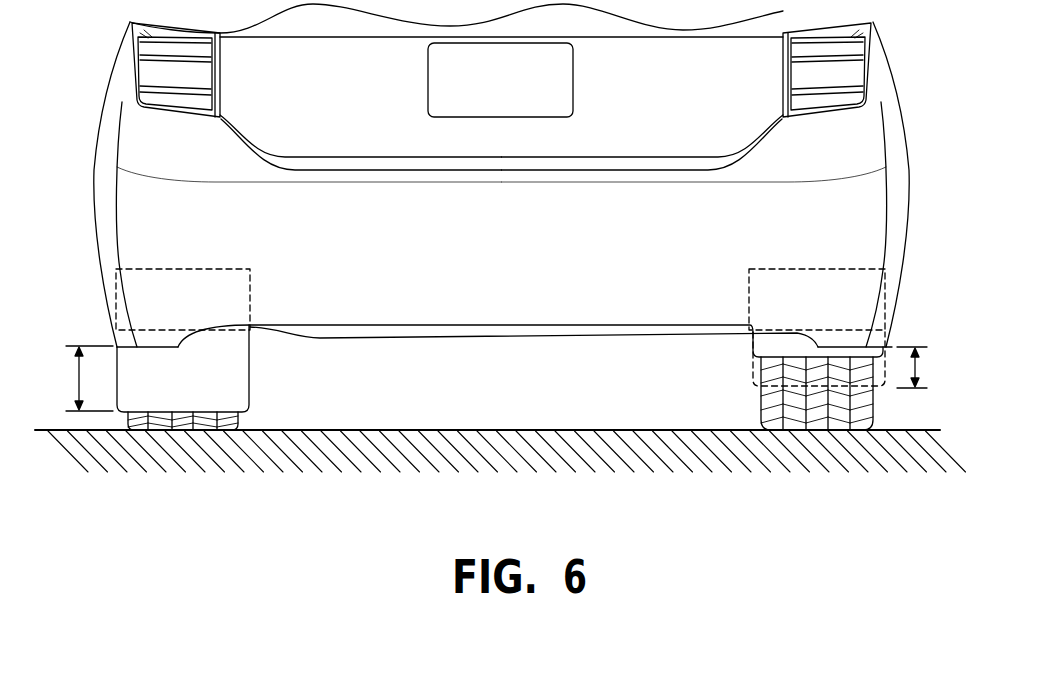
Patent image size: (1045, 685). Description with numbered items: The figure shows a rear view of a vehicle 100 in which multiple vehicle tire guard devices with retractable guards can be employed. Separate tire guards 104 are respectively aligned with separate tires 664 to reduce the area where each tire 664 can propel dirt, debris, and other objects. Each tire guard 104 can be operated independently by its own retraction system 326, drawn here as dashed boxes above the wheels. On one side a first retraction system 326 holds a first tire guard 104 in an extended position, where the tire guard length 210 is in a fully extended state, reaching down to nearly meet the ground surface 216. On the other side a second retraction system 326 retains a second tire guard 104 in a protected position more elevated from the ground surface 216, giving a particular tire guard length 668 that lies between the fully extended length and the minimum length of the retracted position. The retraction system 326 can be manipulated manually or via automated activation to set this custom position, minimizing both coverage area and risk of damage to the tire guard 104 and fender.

The vehicle 100 is at (491, 226).
The tire guard 104 is at (160, 386).
The tire guard length 210 is at (78, 384).
The ground surface 216 is at (528, 430).
The retraction system 326 is at (159, 306).
The tire 664 is at (240, 414).
The tire guard length 668 is at (917, 373).